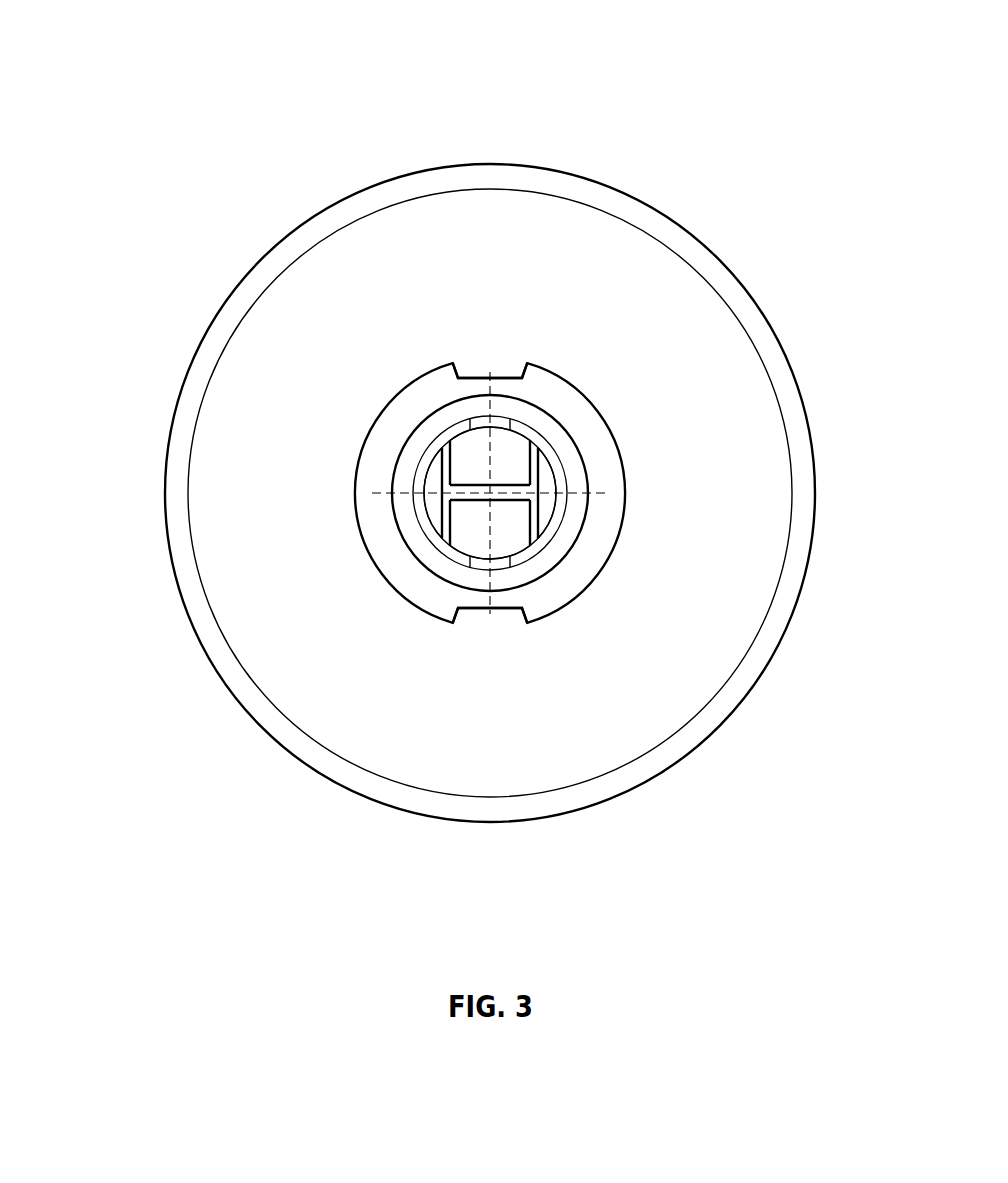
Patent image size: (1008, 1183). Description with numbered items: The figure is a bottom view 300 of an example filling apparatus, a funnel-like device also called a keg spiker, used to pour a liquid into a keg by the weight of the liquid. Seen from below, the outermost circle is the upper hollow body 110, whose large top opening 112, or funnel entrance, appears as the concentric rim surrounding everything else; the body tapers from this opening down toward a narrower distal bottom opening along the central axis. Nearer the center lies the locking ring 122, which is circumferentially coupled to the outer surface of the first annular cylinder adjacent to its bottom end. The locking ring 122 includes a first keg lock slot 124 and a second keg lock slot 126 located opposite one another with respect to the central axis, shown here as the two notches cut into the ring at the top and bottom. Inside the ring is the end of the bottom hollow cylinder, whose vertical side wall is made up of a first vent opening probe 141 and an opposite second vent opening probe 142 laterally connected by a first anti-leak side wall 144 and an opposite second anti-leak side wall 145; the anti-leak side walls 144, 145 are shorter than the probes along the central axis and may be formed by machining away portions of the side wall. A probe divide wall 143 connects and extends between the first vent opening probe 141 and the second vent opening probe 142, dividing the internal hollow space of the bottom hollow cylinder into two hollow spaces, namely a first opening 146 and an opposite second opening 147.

The bottom view 300 is at (131, 43).
The upper hollow body 110 is at (154, 496).
The top opening 112 is at (207, 333).
The locking ring 122 is at (355, 487).
The first keg lock slot 124 is at (473, 607).
The second keg lock slot 126 is at (505, 360).
The first vent opening probe 141 is at (432, 508).
The second vent opening probe 142 is at (546, 476).
The probe divide wall 143 is at (498, 495).
The first anti-leak side wall 144 is at (482, 430).
The second anti-leak side wall 145 is at (518, 557).
The first opening 146 is at (508, 523).
The second opening 147 is at (462, 463).